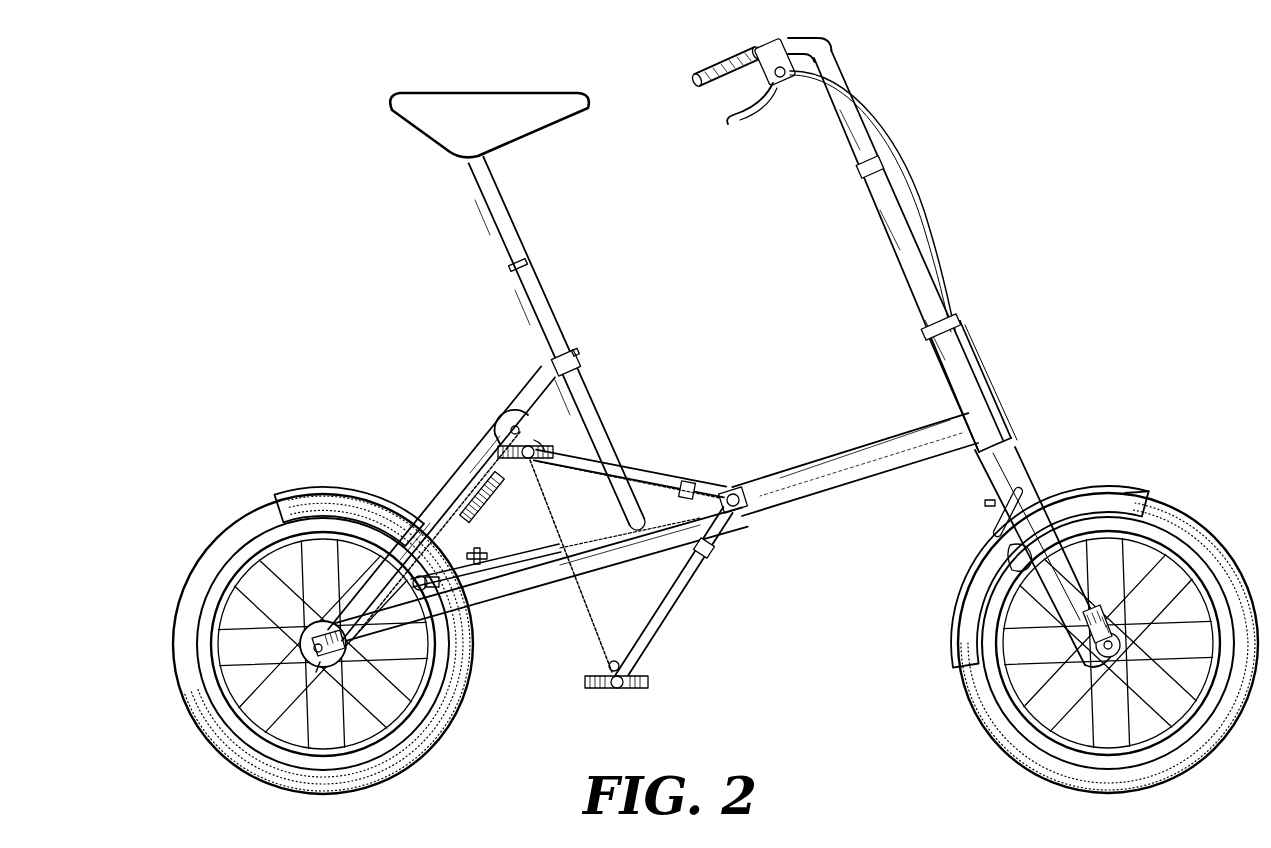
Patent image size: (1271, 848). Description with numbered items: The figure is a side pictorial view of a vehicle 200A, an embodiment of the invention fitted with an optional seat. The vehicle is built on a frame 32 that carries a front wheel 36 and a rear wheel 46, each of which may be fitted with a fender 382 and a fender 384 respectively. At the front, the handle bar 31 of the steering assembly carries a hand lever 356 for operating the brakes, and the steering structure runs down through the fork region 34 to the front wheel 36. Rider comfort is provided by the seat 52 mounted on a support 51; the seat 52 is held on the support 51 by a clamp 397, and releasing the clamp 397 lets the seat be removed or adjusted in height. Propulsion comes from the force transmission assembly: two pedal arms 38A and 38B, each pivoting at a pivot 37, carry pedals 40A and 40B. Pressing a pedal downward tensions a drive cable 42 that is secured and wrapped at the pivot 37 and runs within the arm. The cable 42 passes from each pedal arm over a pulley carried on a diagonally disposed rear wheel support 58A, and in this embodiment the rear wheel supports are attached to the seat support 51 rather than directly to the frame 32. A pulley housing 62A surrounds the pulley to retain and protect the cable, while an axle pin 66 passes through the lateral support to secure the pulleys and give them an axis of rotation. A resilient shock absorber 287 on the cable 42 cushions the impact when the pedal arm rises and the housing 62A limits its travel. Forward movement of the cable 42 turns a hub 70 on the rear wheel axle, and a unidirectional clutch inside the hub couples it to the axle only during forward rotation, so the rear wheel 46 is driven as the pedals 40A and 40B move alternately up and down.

The handle bar 31 is at (722, 54).
The hand lever 356 is at (748, 103).
The seat 52 is at (405, 117).
The clamp 397 is at (578, 361).
The seat support 51 is at (592, 387).
The pulley housing 62A is at (505, 419).
The resilient shock absorber 287 is at (548, 431).
The rear wheel support 58A is at (468, 441).
The pedal 40A is at (548, 449).
The pedal arm 38A is at (638, 469).
The pivot 37 is at (740, 490).
The frame 32 is at (890, 431).
The front fork 34 is at (1030, 469).
The front fender 382 is at (1090, 482).
The rear fender 384 is at (330, 486).
The drive cable 42 is at (428, 475).
The rear wheel 46 is at (232, 538).
The front wheel 36 is at (1190, 513).
The axle pin 66 is at (490, 493).
The hub 70 is at (347, 646).
The pedal arm 38B is at (690, 584).
The pedal 40B is at (617, 691).
The vehicle 200A is at (776, 653).